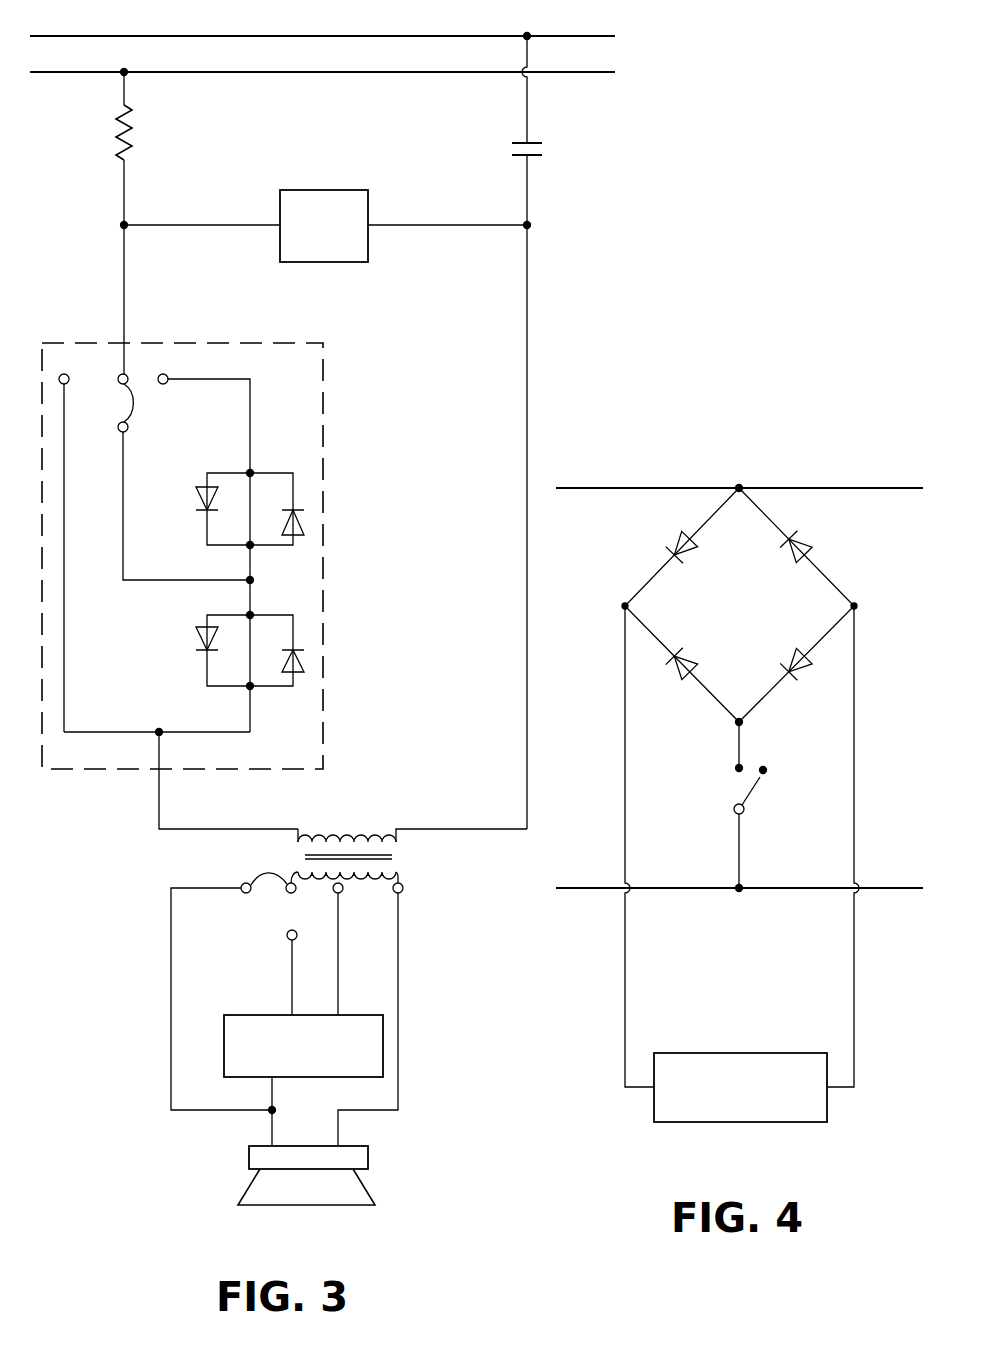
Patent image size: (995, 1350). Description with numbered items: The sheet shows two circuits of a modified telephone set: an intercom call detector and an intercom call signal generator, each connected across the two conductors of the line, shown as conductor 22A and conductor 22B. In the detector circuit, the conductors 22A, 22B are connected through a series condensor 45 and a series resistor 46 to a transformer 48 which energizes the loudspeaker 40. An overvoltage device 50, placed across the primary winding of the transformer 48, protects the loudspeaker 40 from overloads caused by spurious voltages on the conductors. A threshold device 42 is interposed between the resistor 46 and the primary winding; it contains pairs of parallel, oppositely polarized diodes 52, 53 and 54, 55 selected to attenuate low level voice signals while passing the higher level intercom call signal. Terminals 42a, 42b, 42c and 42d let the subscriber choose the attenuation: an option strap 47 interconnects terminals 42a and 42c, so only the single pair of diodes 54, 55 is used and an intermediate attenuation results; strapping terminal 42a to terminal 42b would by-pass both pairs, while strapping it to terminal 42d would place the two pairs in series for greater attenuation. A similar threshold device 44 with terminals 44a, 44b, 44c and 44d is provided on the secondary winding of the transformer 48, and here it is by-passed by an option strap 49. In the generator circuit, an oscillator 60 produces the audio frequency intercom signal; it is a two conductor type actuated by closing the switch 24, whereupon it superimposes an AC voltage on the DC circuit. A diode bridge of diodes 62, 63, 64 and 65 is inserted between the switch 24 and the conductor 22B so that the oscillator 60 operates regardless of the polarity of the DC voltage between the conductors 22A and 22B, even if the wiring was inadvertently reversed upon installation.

In FIG. 3, the conductor 22A is at (165, 73).
In FIG. 4, the conductor 22A is at (860, 888).
In FIG. 3, the conductor 22B is at (437, 36).
In FIG. 4, the conductor 22B is at (845, 489).
In FIG. 4, the switch 24 is at (745, 804).
In FIG. 3, the loudspeaker 40 is at (353, 1160).
In FIG. 3, the threshold device 42 is at (323, 500).
In FIG. 3, the terminal 42a is at (128, 373).
In FIG. 3, the terminal 42b is at (86, 356).
In FIG. 3, the terminal 42c is at (119, 433).
In FIG. 3, the terminal 42d is at (165, 385).
In FIG. 3, the threshold device 44 is at (228, 1048).
In FIG. 3, the terminal 44a is at (289, 882).
In FIG. 3, the terminal 44b is at (240, 886).
In FIG. 3, the terminal 44c is at (287, 938).
In FIG. 3, the terminal 44d is at (342, 893).
In FIG. 3, the series condensor 45 is at (533, 157).
In FIG. 3, the series resistor 46 is at (118, 158).
In FIG. 3, the option strap 47 is at (120, 404).
In FIG. 3, the transformer 48 is at (400, 845).
In FIG. 3, the option strap 49 is at (268, 880).
In FIG. 3, the overvoltage device 50 is at (337, 190).
In FIG. 3, the diode 52 is at (196, 500).
In FIG. 3, the diode 53 is at (284, 518).
In FIG. 3, the diode 54 is at (196, 634).
In FIG. 3, the diode 55 is at (284, 660).
In FIG. 4, the oscillator 60 is at (783, 1115).
In FIG. 4, the diode 62 is at (683, 560).
In FIG. 4, the diode 63 is at (682, 651).
In FIG. 4, the diode 64 is at (780, 668).
In FIG. 4, the diode 65 is at (784, 552).